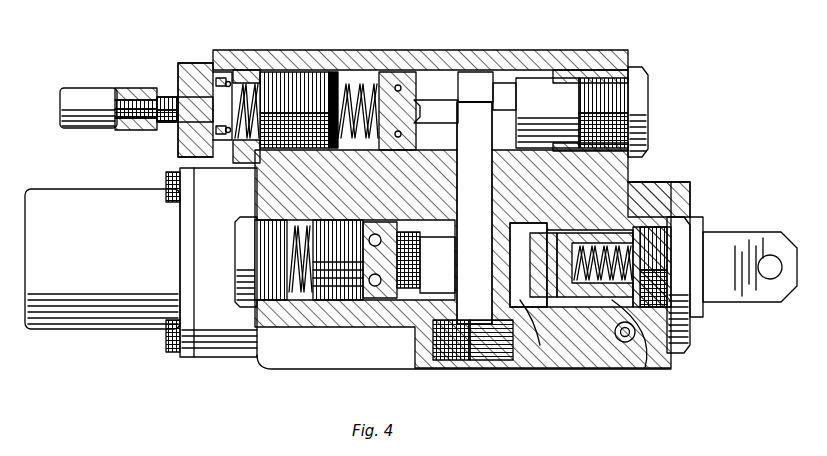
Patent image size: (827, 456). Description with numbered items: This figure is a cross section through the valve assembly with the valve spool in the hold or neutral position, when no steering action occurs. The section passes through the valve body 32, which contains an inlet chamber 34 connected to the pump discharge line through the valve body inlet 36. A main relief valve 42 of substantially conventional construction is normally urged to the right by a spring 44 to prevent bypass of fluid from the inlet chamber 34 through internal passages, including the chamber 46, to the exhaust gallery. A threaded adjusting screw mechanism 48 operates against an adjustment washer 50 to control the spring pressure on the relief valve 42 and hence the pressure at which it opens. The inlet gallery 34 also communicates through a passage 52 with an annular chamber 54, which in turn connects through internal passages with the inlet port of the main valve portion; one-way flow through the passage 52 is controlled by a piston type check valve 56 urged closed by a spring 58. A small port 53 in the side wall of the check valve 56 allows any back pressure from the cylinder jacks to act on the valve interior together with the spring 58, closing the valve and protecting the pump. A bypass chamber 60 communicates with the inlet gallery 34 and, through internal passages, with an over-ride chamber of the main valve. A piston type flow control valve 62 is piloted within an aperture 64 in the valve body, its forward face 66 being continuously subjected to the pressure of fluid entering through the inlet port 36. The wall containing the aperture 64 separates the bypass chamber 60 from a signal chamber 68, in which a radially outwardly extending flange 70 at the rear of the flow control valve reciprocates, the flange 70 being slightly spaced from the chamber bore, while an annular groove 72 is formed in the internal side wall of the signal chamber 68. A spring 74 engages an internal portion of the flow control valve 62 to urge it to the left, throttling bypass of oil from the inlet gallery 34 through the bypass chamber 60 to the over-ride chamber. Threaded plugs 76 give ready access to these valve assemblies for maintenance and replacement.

The valve body 32 is at (569, 50).
The inlet chamber 34 is at (489, 217).
The valve body inlet 36 is at (500, 358).
The main relief valve 42 is at (440, 100).
The spring 44 is at (255, 62).
The chamber 46 is at (413, 78).
The threaded adjusting screw mechanism 48 is at (148, 93).
The adjustment washer 50 is at (218, 74).
The passage 52 is at (405, 300).
The small port 53 is at (380, 232).
The annular chamber 54 is at (377, 300).
The piston type check valve 56 is at (410, 260).
The spring 58 is at (310, 297).
The bypass chamber 60 is at (530, 306).
The piston type flow control valve 62 is at (566, 294).
The aperture 64 is at (553, 240).
The forward face 66 is at (530, 250).
The signal chamber 68 is at (631, 200).
The flange 70 is at (651, 326).
The annular groove 72 is at (651, 222).
The spring 74 is at (600, 296).
The threaded plugs 76 is at (634, 95).